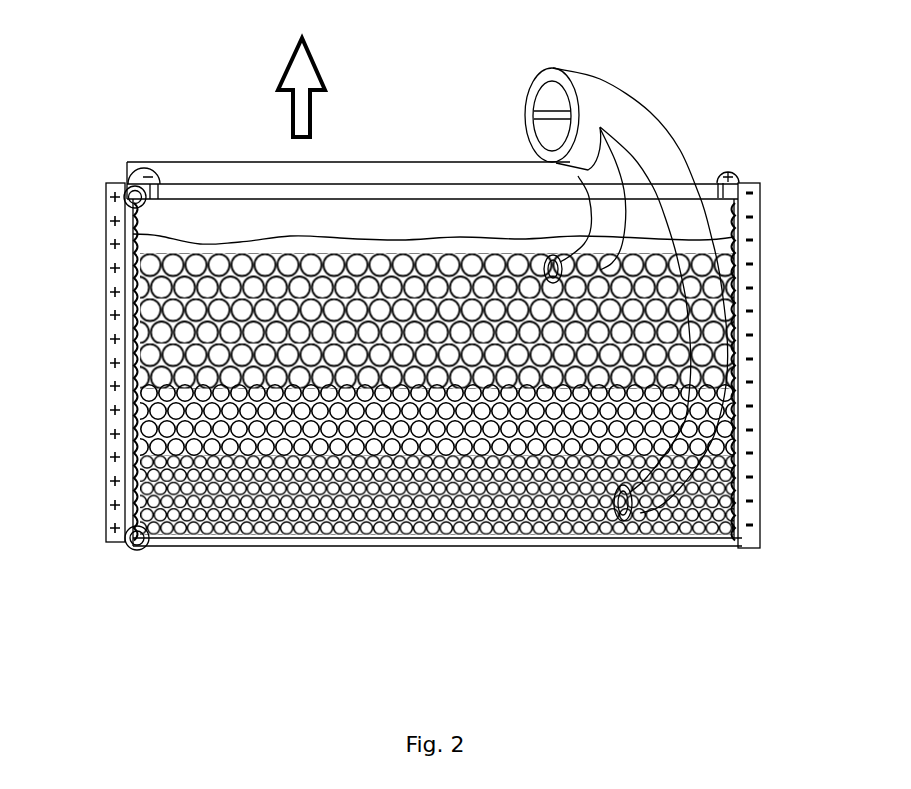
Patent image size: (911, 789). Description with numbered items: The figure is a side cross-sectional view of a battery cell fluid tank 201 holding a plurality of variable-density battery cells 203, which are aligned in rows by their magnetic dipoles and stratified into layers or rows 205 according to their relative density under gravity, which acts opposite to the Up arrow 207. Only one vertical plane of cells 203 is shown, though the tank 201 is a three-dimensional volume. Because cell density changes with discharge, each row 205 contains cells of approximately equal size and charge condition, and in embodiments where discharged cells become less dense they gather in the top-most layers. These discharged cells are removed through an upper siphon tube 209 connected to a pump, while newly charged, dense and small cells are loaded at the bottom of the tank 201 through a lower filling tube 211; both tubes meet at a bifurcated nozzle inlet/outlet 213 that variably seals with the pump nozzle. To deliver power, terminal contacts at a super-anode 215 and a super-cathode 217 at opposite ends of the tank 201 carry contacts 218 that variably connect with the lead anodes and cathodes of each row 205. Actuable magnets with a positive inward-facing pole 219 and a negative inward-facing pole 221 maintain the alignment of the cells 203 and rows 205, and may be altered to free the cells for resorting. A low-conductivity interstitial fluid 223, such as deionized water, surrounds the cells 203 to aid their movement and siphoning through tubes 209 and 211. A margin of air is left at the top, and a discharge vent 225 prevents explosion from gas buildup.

The battery cell fluid tank 201 is at (215, 557).
The variable-density battery cells 203 is at (312, 312).
The rows of cells 205 is at (142, 310).
The Up arrow 207 is at (303, 72).
The upper siphon tube 209 is at (605, 185).
The lower filling tube 211 is at (680, 200).
The bifurcated nozzle inlet/outlet 213 is at (583, 88).
The super-anode 215 is at (133, 222).
The super-cathode 217 is at (740, 203).
The contacts 218 is at (130, 238).
The positive inward-facing pole 219 is at (113, 520).
The negative inward-facing pole 221 is at (757, 233).
The interstitial fluid 223 is at (173, 240).
The discharge vent 225 is at (145, 205).